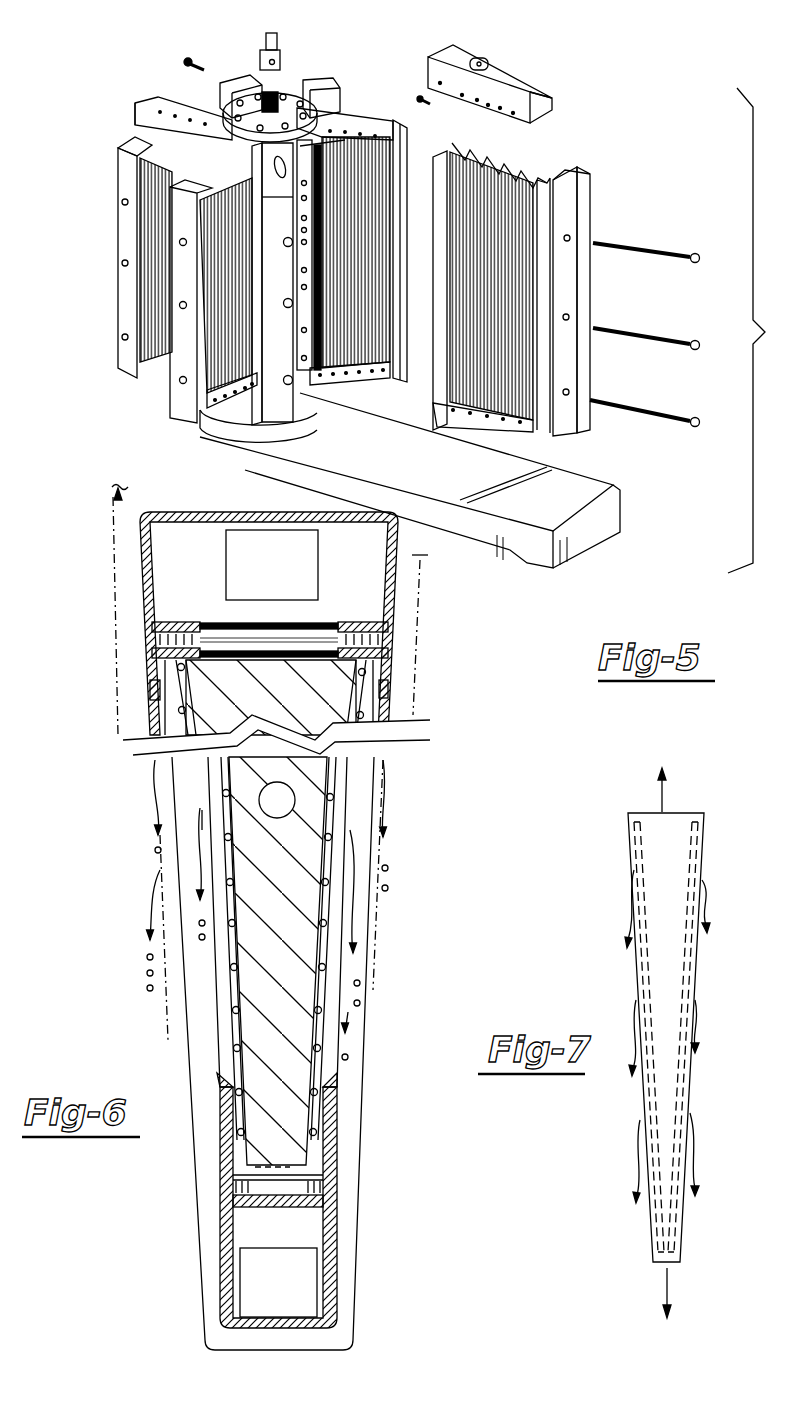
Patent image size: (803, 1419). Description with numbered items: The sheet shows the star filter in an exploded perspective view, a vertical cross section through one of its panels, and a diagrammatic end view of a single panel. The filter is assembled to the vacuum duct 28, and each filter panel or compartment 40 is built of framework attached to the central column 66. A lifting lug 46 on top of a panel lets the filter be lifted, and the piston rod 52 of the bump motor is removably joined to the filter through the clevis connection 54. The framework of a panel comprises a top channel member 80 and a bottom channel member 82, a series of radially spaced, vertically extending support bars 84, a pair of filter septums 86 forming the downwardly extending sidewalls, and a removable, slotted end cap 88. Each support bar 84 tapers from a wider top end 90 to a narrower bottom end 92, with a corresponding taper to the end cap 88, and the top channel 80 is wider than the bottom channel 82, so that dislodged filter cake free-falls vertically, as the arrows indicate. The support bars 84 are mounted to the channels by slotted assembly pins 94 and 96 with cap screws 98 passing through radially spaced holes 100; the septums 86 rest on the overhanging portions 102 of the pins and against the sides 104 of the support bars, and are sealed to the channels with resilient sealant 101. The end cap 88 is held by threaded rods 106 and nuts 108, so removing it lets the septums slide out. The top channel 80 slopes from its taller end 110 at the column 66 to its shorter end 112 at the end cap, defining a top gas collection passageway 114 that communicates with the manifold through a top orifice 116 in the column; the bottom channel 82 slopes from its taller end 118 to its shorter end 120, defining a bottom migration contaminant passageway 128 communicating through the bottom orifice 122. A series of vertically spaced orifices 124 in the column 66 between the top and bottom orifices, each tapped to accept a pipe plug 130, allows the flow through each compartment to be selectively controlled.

In FIG. 5, the vacuum duct 28 is at (323, 481).
In FIG. 5, the filter panel 40 is at (117, 368).
In FIG. 5, the lifting lug 46 is at (486, 63).
In FIG. 5, the piston rod 52 is at (273, 46).
In FIG. 5, the clevis connection 54 is at (263, 53).
In FIG. 5, the central column 66 is at (298, 170).
In FIG. 5, the top channel member 80 is at (516, 81).
In FIG. 6, the top channel member 80 is at (396, 598).
In FIG. 5, the bottom channel member 82 is at (497, 420).
In FIG. 6, the bottom channel member 82 is at (337, 1278).
In FIG. 6, the support bar 84 is at (292, 896).
In FIG. 6, the filter septum 86 is at (350, 780).
In FIG. 7, the filter septum 86 is at (626, 877).
In FIG. 5, the end cap 88 is at (125, 300).
In FIG. 6, the end cap 88 is at (373, 990).
In FIG. 7, the end cap 88 is at (682, 816).
In FIG. 6, the top end 90 is at (332, 687).
In FIG. 6, the bottom end 92 is at (300, 1152).
In FIG. 6, the slotted assembly pin 94 is at (230, 662).
In FIG. 6, the slotted assembly pin 96 is at (268, 1210).
In FIG. 6, the cap screw 98 is at (388, 640).
In FIG. 5, the hole 100 is at (453, 60).
In FIG. 6, the hole 100 is at (330, 1197).
In FIG. 6, the sealant 101 is at (388, 690).
In FIG. 6, the overhanging portion 102 is at (232, 1172).
In FIG. 6, the side of support bar 104 is at (334, 814).
In FIG. 5, the threaded rod 106 is at (655, 253).
In FIG. 5, the nut 108 is at (180, 242).
In FIG. 5, the taller end 110 is at (452, 47).
In FIG. 5, the shorter end 112 is at (551, 108).
In FIG. 6, the top gas collection passageway 114 is at (365, 570).
In FIG. 5, the top orifice 116 is at (366, 105).
In FIG. 6, the top orifice 116 is at (290, 578).
In FIG. 5, the taller end 118 is at (406, 448).
In FIG. 5, the shorter end 120 is at (540, 428).
In FIG. 5, the bottom orifice 122 is at (332, 385).
In FIG. 6, the bottom orifice 122 is at (300, 1298).
In FIG. 5, the vertically spaced orifices 124 is at (306, 200).
In FIG. 6, the bottom migration contaminant passageway 128 is at (243, 1237).
In FIG. 5, the pipe plug 130 is at (423, 285).